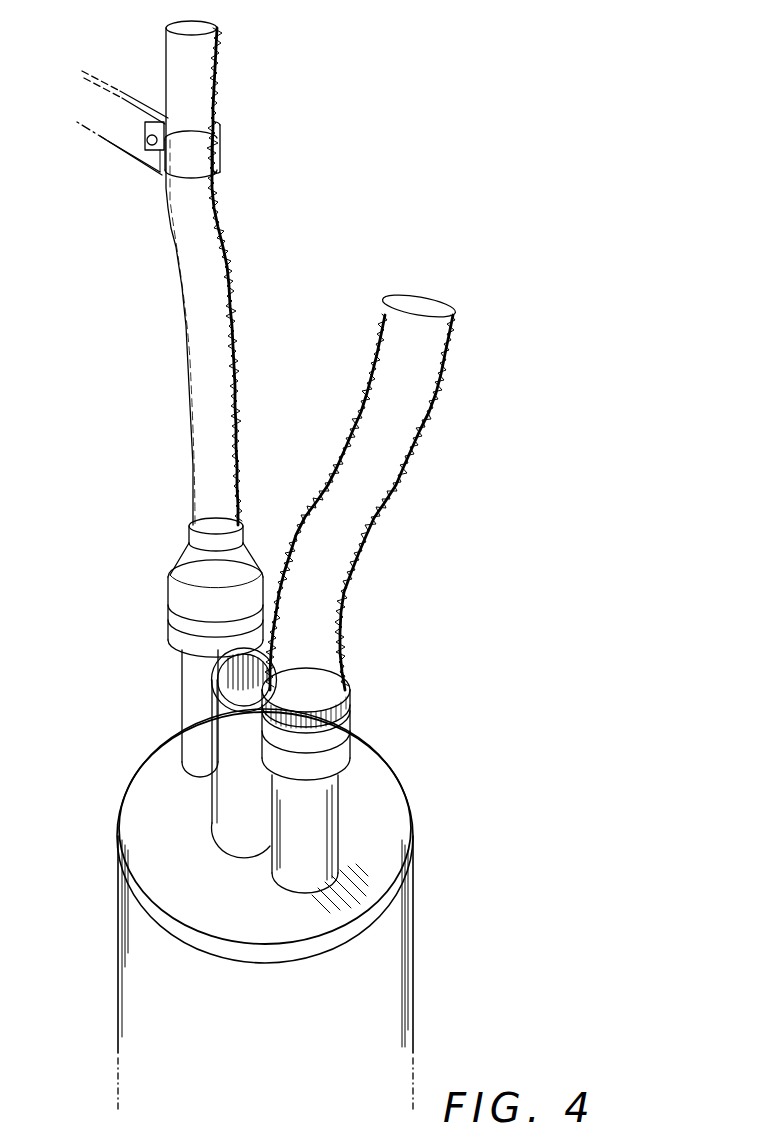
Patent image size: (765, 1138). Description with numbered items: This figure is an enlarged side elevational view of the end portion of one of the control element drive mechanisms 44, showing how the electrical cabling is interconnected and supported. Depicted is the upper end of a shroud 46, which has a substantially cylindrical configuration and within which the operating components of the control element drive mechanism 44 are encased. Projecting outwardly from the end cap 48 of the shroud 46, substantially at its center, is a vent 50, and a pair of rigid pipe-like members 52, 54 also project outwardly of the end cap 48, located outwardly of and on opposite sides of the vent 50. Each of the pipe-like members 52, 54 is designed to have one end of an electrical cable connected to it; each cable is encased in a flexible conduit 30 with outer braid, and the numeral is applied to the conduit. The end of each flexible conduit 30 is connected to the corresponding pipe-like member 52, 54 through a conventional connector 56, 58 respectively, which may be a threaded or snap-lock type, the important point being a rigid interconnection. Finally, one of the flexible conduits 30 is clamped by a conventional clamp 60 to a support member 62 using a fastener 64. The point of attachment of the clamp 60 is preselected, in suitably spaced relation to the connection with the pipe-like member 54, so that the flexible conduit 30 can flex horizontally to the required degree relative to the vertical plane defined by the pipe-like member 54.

The flexible conduit 30 is at (230, 271).
The control element drive mechanism 44 is at (417, 903).
The shroud 46 is at (412, 973).
The end cap 48 is at (393, 768).
The vent 50 is at (228, 813).
The pipe-like member 52 is at (337, 808).
The pipe-like member 54 is at (186, 683).
The connector 56 is at (352, 707).
The connector 58 is at (168, 612).
The clamp 60 is at (222, 147).
The support member 62 is at (133, 161).
The fastener 64 is at (147, 132).